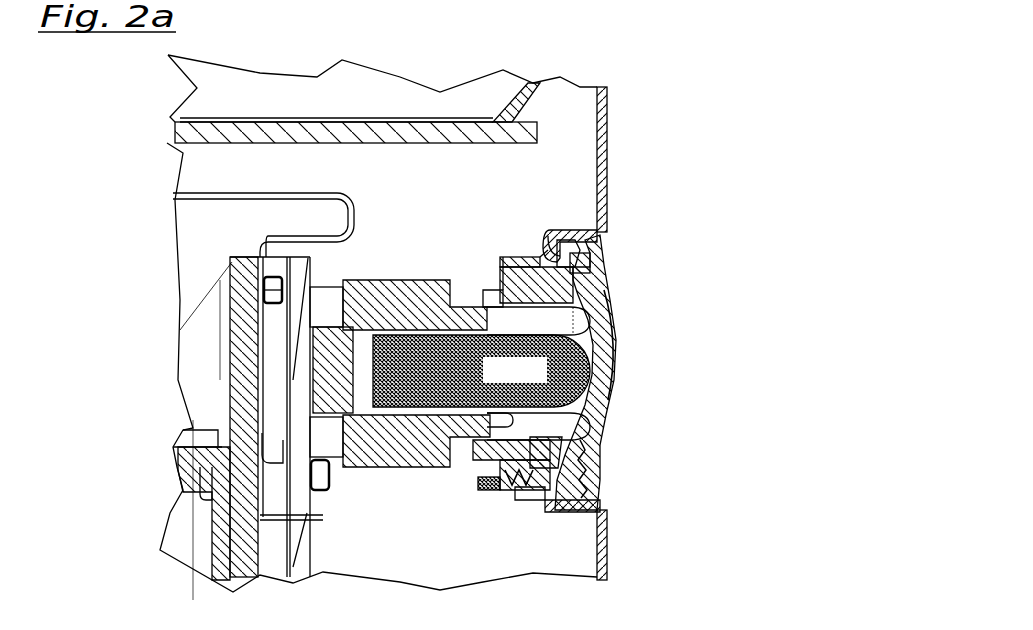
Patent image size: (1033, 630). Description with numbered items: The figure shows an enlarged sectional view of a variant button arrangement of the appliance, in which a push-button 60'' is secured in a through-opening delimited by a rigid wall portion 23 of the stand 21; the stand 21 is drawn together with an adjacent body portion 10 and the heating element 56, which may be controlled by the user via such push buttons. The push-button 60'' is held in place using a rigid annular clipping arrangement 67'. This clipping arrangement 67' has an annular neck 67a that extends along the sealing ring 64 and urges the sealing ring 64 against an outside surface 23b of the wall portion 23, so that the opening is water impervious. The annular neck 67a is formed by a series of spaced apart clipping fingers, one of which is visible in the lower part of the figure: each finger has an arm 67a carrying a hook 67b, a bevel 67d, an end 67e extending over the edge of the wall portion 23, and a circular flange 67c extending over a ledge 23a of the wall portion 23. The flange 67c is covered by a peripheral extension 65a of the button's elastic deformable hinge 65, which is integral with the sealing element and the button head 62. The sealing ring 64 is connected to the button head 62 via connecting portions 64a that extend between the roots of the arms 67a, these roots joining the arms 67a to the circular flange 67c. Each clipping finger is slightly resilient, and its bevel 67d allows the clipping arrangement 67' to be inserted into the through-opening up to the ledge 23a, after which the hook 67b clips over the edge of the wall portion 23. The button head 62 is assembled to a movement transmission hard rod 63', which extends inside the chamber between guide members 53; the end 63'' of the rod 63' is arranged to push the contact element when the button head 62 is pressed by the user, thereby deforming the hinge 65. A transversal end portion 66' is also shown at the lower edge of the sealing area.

The vehicle body panel 10 is at (377, 92).
The heating element 56 is at (317, 143).
The rigid wall portion 23 is at (515, 250).
The ledge 23a is at (540, 243).
The outside surface 23b is at (565, 238).
The stand 21 is at (609, 188).
The peripheral extension 65a is at (570, 257).
The connecting portions 64a is at (582, 273).
The elastic deformable hinge 65 is at (600, 315).
The button head 62 is at (609, 352).
The guide members 53 is at (380, 327).
The hook 67b is at (477, 290).
The movement transmission hard rod 63' is at (481, 371).
The end of the hard rod 63'' is at (411, 465).
The rigid annular clipping arrangement 67' is at (574, 373).
The annular neck 67a is at (540, 447).
The push-button 60'' is at (682, 370).
The bevel 67d is at (485, 485).
The end 67e is at (493, 488).
The circular flange 67c is at (590, 493).
The sealing ring 64 is at (525, 488).
The support plate 66' is at (572, 556).